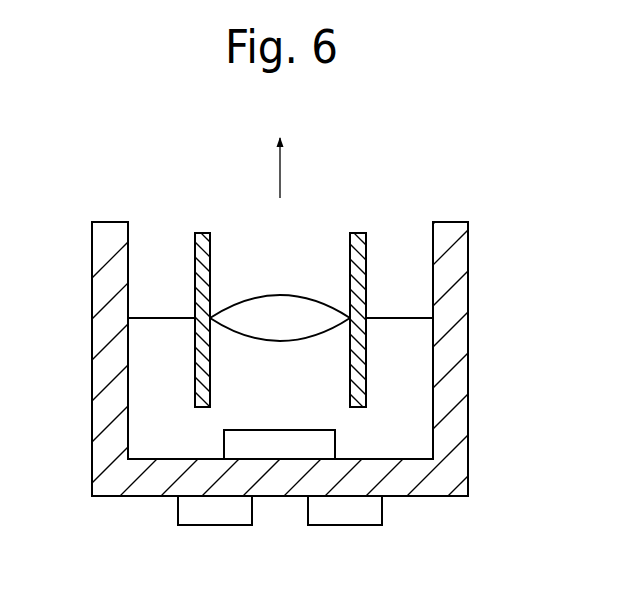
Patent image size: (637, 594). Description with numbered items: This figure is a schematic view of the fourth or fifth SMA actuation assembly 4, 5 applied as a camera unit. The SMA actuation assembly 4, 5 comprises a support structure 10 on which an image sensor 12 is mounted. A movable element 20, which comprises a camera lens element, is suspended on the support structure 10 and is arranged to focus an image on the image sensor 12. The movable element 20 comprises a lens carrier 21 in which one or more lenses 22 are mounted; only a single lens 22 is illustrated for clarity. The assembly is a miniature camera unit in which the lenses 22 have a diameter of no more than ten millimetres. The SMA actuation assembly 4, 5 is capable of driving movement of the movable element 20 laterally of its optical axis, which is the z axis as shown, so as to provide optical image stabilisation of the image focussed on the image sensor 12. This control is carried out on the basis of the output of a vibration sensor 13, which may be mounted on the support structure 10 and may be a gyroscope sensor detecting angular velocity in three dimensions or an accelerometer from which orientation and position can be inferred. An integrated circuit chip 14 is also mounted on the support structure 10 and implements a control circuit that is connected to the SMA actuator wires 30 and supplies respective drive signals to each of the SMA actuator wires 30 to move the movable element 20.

The fourth SMA actuation assembly 4 is at (318, 342).
The fifth SMA actuation assembly 5 is at (318, 352).
The support structure 10 is at (455, 380).
The image sensor 12 is at (282, 447).
The vibration sensor 13 is at (195, 517).
The integrated circuit chip 14 is at (363, 517).
The movable element 20 is at (287, 246).
The lens carrier 21 is at (362, 234).
The lens 22 is at (260, 307).
The SMA actuator wire 30 is at (160, 320).